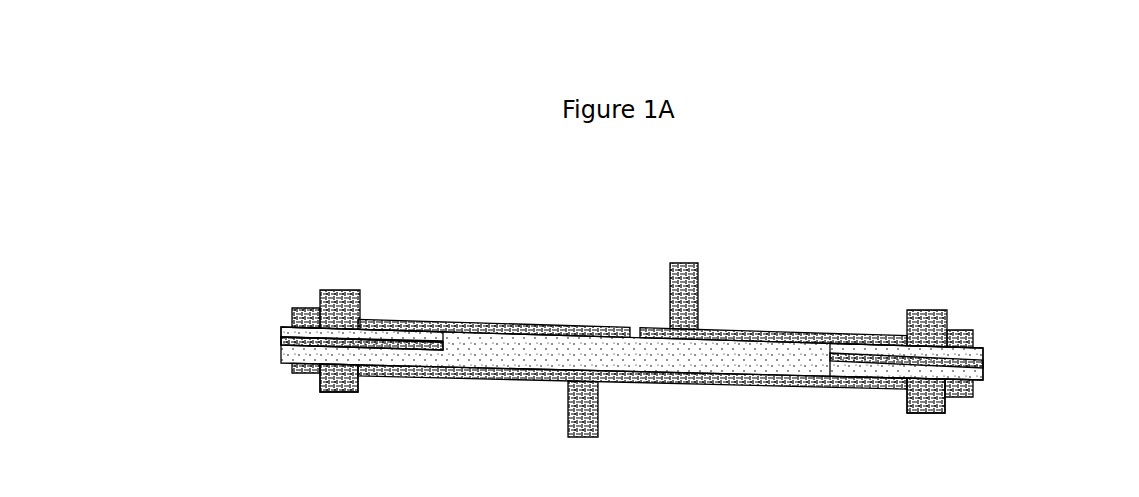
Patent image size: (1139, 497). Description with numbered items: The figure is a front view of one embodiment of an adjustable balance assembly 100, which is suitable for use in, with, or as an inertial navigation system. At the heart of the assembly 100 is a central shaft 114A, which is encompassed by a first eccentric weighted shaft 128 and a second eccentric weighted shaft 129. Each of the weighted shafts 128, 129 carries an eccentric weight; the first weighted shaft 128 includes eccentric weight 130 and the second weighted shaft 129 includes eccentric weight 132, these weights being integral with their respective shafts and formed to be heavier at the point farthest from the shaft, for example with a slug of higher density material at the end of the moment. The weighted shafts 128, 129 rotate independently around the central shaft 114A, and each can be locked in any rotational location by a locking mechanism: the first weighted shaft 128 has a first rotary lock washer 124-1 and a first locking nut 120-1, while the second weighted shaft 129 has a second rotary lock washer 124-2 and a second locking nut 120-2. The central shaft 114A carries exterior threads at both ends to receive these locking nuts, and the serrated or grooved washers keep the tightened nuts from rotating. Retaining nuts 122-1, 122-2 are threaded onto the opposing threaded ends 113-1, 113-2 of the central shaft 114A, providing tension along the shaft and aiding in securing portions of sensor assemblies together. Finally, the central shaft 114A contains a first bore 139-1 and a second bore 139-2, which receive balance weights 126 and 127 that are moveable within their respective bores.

The adjustable balance assembly 100 is at (1022, 202).
The first threaded end 113-1 is at (290, 324).
The second threaded end 113-2 is at (983, 348).
The central shaft 114A is at (633, 372).
The first locking nut 120-1 is at (327, 394).
The second locking nut 120-2 is at (928, 310).
The first retaining nut 122-1 is at (291, 369).
The second retaining nut 122-2 is at (973, 396).
The first rotary lock washer 124-1 is at (359, 393).
The second rotary lock washer 124-2 is at (905, 414).
The first balance weight 126 is at (408, 332).
The second balance weight 127 is at (914, 356).
The first eccentric weighted shaft 128 is at (518, 322).
The second eccentric weighted shaft 129 is at (798, 333).
The eccentric weight 130 is at (597, 435).
The eccentric weight 132 is at (698, 263).
The first bore 139-1 is at (282, 341).
The second bore 139-2 is at (983, 365).